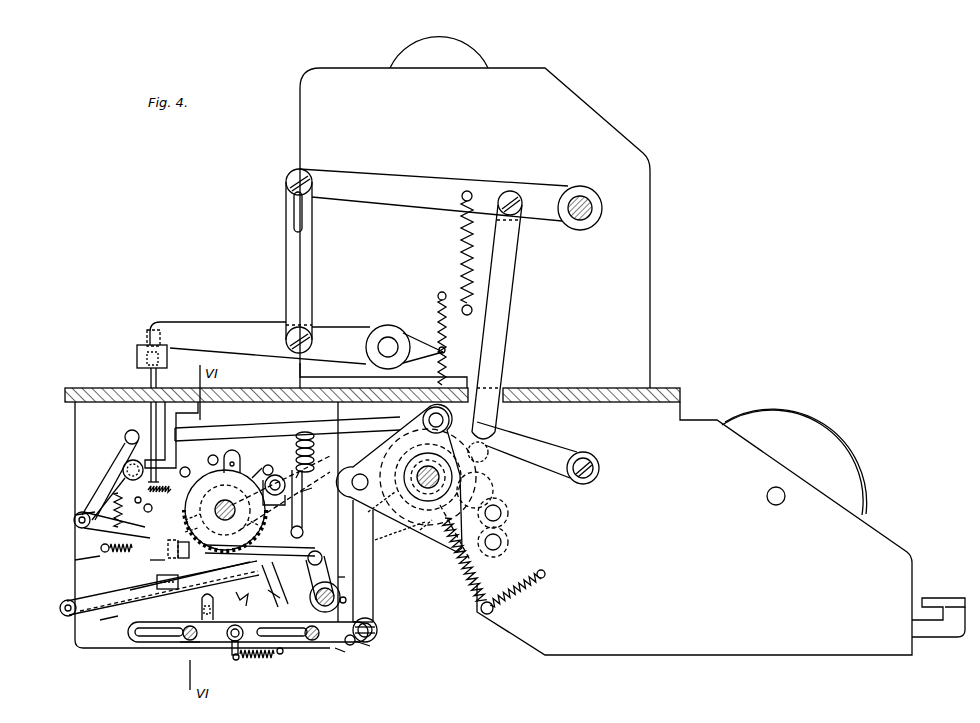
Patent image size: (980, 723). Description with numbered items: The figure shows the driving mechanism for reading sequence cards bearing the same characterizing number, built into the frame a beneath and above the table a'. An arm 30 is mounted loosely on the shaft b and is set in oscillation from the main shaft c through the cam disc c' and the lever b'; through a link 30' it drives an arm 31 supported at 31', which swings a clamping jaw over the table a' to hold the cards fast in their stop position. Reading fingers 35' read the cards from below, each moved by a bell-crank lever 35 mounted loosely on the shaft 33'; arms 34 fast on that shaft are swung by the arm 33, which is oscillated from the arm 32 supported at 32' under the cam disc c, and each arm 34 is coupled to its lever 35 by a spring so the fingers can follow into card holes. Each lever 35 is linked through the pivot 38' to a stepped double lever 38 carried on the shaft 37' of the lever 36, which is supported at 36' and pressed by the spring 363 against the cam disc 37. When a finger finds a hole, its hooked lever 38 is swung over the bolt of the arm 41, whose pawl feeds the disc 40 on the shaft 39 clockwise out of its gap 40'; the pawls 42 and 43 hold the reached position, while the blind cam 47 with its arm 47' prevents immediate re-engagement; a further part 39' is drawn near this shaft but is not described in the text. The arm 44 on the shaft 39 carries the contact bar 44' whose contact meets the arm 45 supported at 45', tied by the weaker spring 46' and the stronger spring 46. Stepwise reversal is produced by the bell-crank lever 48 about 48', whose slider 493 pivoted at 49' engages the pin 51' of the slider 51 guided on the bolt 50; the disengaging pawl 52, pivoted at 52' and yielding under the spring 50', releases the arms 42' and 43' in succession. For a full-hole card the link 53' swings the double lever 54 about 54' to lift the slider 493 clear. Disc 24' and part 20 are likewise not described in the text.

The frame a is at (493, 368).
The table a' is at (372, 382).
The dome cover p is at (452, 47).
The arm 30 is at (427, 187).
The link 30' is at (312, 267).
The shaft b is at (587, 208).
The lever b' is at (503, 315).
The arm 31 is at (258, 332).
The support of arm 31 31' is at (406, 338).
The reading fingers 35' is at (141, 442).
The bell-crank lever 35 is at (72, 548).
The arm 33 is at (110, 475).
The shaft 33' is at (69, 519).
The arm 34 is at (94, 498).
The arm 45 is at (104, 488).
The support of arm 45 45' is at (149, 470).
The link 53' is at (107, 625).
The slider 51 is at (246, 646).
The bolt 50 is at (238, 651).
The pin 51' is at (223, 648).
The pivot of disengaging pawl 52' is at (234, 662).
The spring 50' is at (258, 663).
The double lever 54 is at (356, 624).
The bolt 54' is at (358, 597).
The pivot 49' is at (377, 626).
The slider 493 is at (368, 642).
The bell-crank lever 48 is at (399, 513).
The pivot of bell-crank lever 48 48' is at (353, 469).
The main shaft c is at (428, 477).
The cam disc c' is at (390, 536).
The lever 36 is at (434, 559).
The support of lever 36 36' is at (508, 542).
The spring 363 is at (533, 597).
The cam disc 37 is at (447, 533).
The shaft 37' is at (314, 499).
The arm 32 is at (492, 490).
The support of arm 32 32' is at (507, 513).
The disc 24' is at (794, 452).
The bracket 20 is at (948, 598).
The shaft 39 is at (257, 503).
The pawl 39' is at (267, 461).
The blind cam 47 is at (284, 534).
The arm 47' is at (240, 458).
The arm 41 is at (260, 465).
The spring 46 is at (151, 506).
The spring 46' is at (120, 560).
The disc 40 is at (182, 520).
The gap 40' is at (267, 521).
The arm 44 is at (260, 547).
The contact bar 44' is at (115, 542).
The pawl 43 is at (231, 606).
The arm 43' is at (284, 595).
The pawl 42 is at (177, 595).
The arm 42' is at (284, 588).
The double lever 38 is at (317, 492).
The pivot 38' is at (319, 596).
The disengaging pawl 52 is at (244, 605).